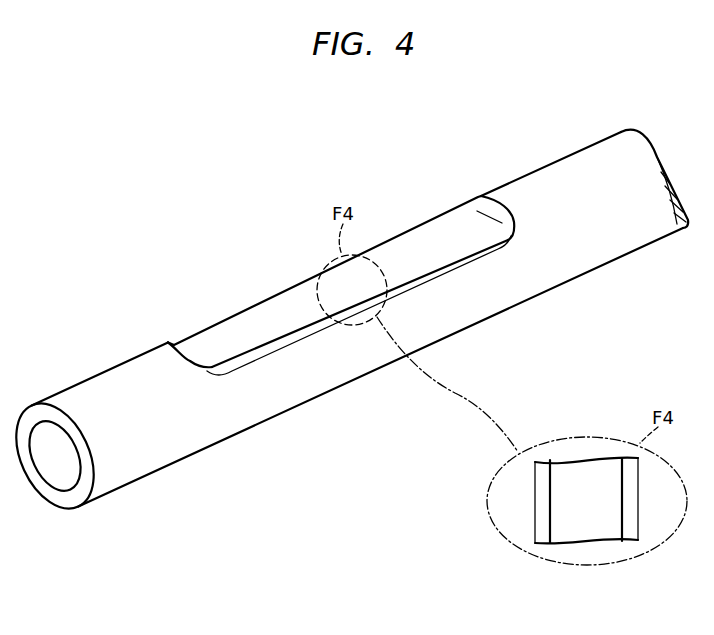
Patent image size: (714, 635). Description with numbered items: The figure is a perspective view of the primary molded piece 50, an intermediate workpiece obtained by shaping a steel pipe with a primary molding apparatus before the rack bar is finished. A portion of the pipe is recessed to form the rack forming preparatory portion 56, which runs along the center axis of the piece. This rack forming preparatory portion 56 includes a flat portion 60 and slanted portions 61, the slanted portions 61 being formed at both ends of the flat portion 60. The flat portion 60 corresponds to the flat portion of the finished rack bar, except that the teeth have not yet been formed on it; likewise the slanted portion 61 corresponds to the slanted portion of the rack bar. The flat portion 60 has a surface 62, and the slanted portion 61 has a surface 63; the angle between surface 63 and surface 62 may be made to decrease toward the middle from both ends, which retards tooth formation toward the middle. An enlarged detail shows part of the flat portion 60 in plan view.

The primary molded piece 50 is at (504, 186).
The rack forming preparatory portion 56 is at (432, 233).
The flat portion 60 is at (275, 301).
The slanted portion 61 is at (305, 338).
The surface of the flat portion 62 is at (232, 331).
The surface of the slanted portion 63 is at (467, 258).